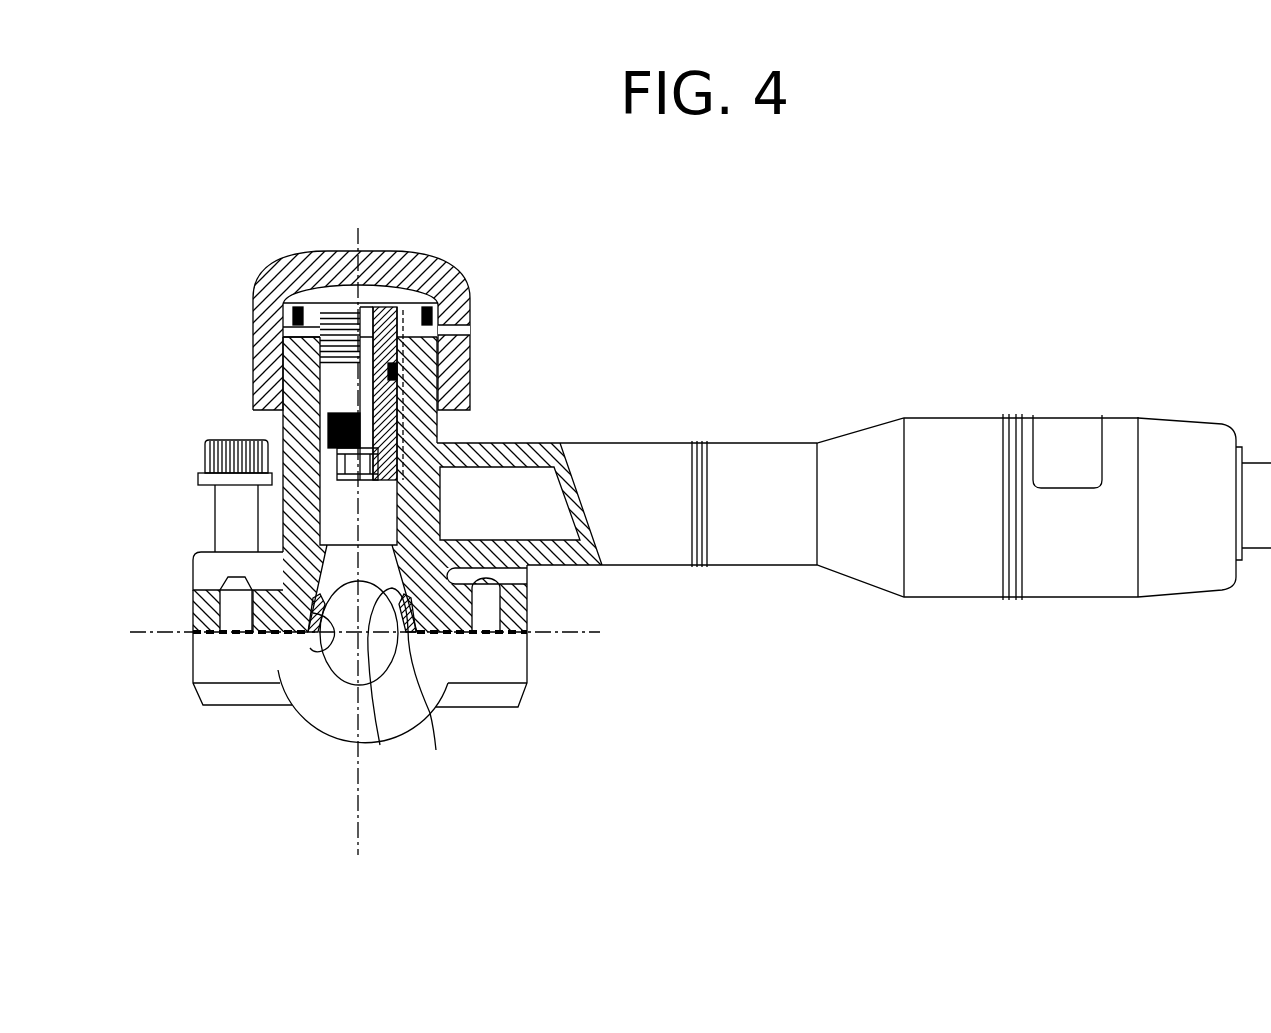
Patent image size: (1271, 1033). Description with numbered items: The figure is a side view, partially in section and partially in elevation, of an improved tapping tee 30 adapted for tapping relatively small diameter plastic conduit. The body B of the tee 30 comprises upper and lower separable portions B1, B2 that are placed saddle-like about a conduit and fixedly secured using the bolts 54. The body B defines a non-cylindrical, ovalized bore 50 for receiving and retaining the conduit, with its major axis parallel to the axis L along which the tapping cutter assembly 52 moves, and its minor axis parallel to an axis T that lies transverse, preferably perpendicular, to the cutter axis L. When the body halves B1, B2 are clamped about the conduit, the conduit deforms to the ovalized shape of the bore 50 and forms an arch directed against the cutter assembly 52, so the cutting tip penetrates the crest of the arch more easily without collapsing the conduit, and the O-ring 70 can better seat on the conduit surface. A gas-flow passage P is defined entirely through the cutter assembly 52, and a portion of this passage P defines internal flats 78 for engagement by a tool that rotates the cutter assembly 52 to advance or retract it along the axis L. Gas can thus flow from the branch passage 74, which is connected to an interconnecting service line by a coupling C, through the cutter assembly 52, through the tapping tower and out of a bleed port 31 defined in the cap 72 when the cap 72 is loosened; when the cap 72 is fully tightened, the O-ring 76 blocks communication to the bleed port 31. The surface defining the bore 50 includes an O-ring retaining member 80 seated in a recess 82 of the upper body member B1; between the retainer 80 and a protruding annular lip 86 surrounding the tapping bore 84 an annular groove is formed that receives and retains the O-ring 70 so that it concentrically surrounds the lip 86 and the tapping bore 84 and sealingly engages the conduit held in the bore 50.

The tee 30 is at (520, 390).
The bleed port 31 is at (467, 330).
The ovalized bore 50 is at (300, 712).
The cutter assembly 52 is at (340, 466).
The bolts 54 is at (188, 461).
The O-ring 70 is at (410, 684).
The cap 72 is at (442, 268).
The branch passage 74 is at (550, 468).
The O-ring 76 is at (300, 307).
The internal flats 78 is at (368, 318).
The O-ring retaining member 80 is at (330, 650).
The recess 82 is at (312, 633).
The tapping bore 84 is at (395, 575).
The protruding annular lip 86 is at (380, 745).
The body B is at (193, 600).
The upper body member B1 is at (194, 556).
The lower body portion B2 is at (194, 683).
The coupling C is at (1103, 406).
The cutter axis L is at (358, 855).
The gas-flow passage P is at (372, 305).
The transverse axis T is at (587, 636).